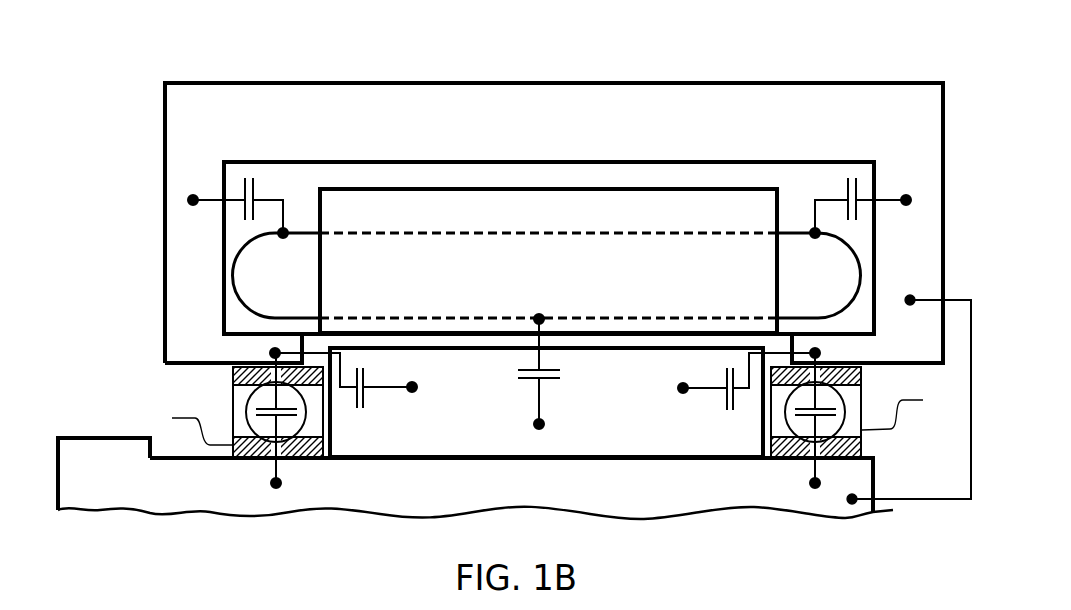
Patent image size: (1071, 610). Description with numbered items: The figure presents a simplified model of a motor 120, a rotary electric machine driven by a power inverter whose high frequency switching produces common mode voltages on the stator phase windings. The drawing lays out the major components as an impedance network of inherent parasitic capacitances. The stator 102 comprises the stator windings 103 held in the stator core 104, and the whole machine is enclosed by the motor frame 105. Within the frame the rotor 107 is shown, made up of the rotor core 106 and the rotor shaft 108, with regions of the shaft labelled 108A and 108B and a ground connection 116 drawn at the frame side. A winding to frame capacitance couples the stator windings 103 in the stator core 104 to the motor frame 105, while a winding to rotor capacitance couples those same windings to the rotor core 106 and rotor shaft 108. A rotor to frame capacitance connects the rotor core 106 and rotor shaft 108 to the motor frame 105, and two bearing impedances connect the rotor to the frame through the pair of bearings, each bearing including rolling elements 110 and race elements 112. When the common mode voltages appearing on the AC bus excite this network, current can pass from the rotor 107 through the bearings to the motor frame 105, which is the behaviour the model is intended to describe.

The motor 120 is at (596, 60).
The stator 102 is at (131, 205).
The stator windings 103 is at (242, 300).
The stator core 104 is at (555, 280).
The motor frame 105 is at (560, 135).
The rotor core 106 is at (621, 421).
The rotor 107 is at (121, 397).
The rotor shaft 108 is at (544, 505).
The base portion 108A is at (196, 458).
The base portion 108B is at (875, 480).
The rolling elements 110 is at (247, 410).
The race elements 112 is at (232, 371).
The ground connection 116 is at (962, 499).